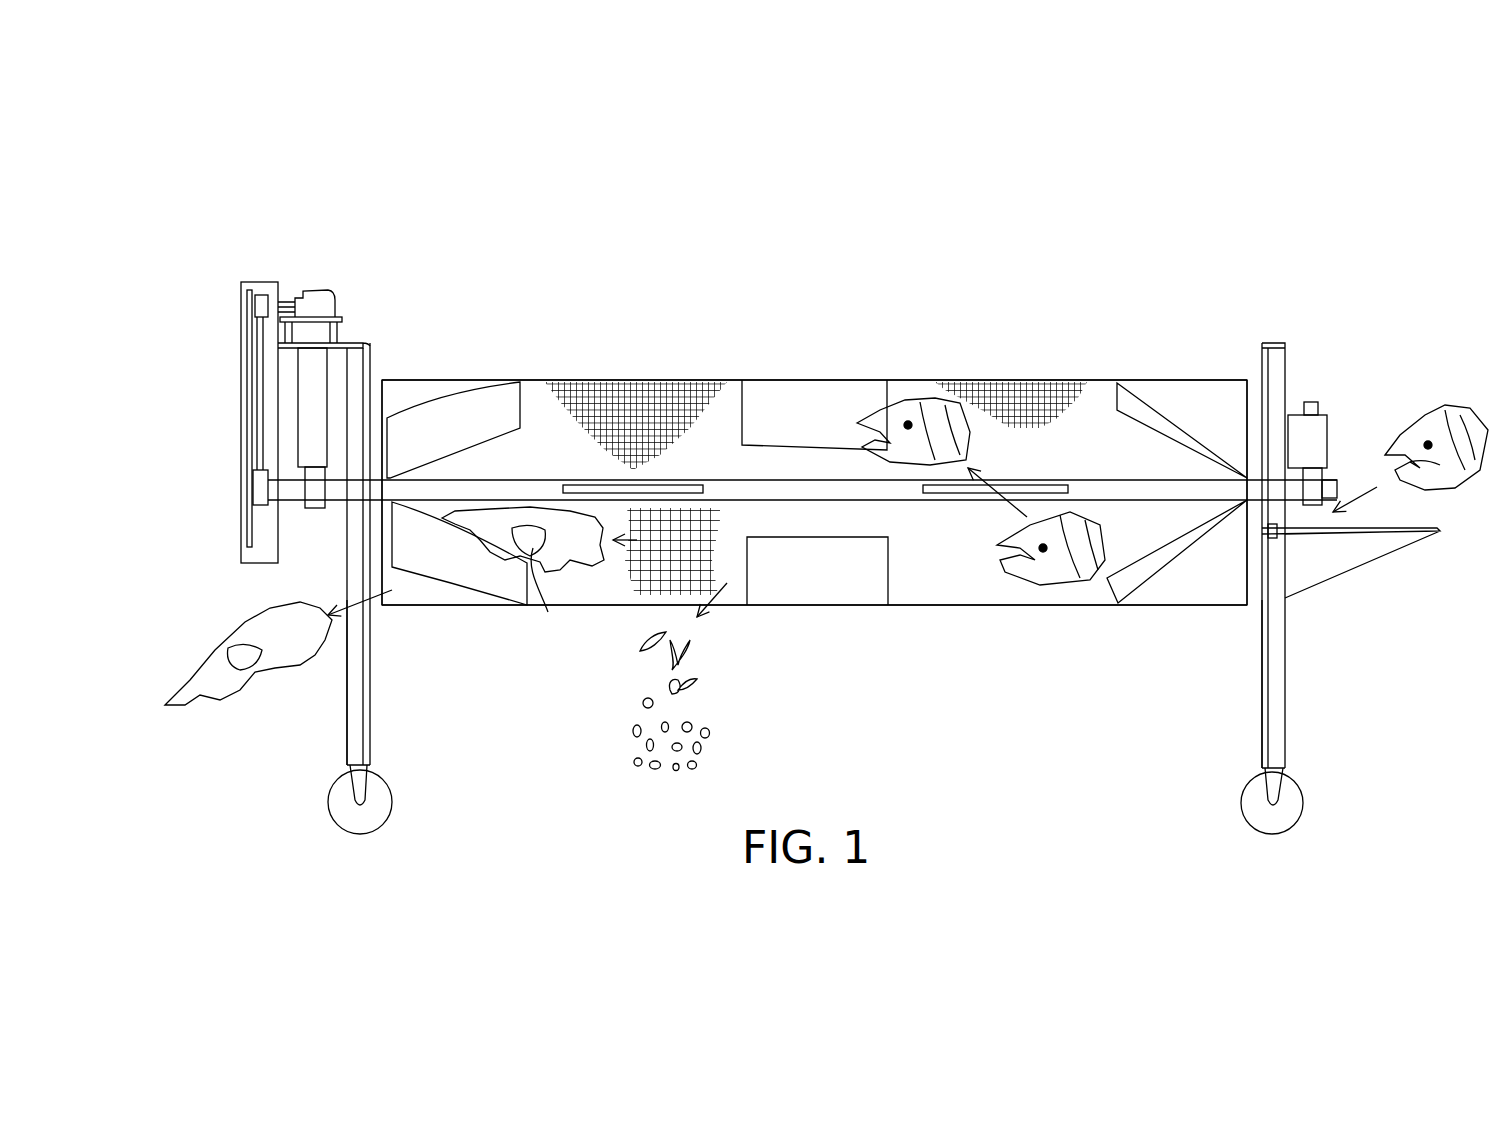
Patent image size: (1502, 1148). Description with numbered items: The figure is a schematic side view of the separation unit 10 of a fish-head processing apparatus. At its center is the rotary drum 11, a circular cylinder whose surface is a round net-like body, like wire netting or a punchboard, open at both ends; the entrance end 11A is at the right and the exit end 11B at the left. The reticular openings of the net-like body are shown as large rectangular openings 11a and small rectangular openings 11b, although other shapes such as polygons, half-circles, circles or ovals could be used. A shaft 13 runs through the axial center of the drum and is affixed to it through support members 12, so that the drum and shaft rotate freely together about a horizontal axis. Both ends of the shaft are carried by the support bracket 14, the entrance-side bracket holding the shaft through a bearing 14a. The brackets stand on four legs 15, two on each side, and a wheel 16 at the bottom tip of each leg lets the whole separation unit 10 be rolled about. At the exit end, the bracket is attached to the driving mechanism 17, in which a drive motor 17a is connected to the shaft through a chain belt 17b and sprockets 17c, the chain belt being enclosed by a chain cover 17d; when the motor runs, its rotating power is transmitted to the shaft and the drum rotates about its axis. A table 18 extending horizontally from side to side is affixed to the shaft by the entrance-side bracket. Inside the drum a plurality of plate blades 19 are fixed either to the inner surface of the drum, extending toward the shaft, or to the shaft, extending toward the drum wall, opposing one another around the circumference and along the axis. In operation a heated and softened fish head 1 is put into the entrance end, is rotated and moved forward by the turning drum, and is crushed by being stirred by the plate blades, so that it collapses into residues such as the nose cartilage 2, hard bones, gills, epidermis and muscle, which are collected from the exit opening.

The fish head 1 is at (1450, 467).
The nose cartilage 2 is at (238, 695).
The separation unit 10 is at (1060, 326).
The rotary drum 11 is at (1022, 607).
The entrance end 11A is at (1253, 378).
The exit end 11B is at (377, 608).
The large rectangular openings 11a is at (653, 580).
The small rectangular openings 11b is at (627, 382).
The support members 12 is at (472, 407).
The shaft 13 is at (897, 490).
The support bracket 14 is at (355, 355).
The bearing 14a is at (1322, 437).
The legs 15 is at (363, 705).
The wheel 16 is at (1252, 805).
The driving mechanism 17 is at (247, 274).
The drive motor 17a is at (320, 297).
The chain belt 17b is at (258, 403).
The sprockets 17c is at (260, 303).
The chain cover 17d is at (263, 553).
The table 18 is at (1357, 557).
The plate blades 19 is at (668, 488).